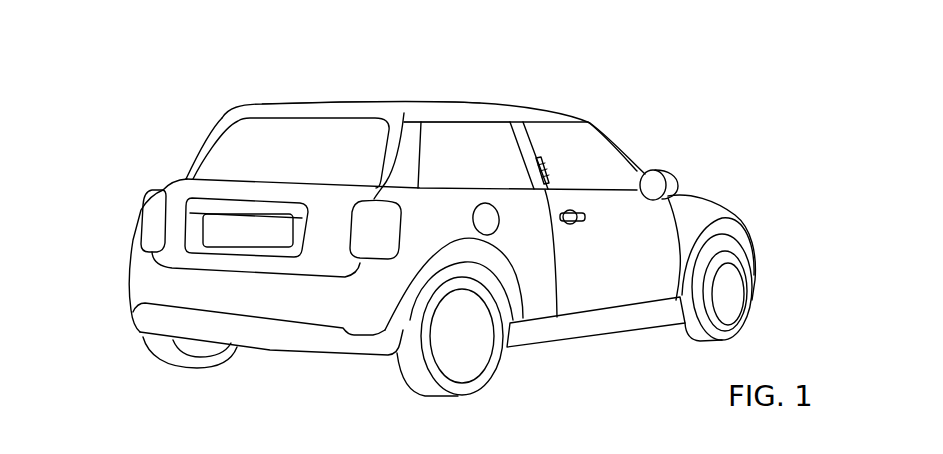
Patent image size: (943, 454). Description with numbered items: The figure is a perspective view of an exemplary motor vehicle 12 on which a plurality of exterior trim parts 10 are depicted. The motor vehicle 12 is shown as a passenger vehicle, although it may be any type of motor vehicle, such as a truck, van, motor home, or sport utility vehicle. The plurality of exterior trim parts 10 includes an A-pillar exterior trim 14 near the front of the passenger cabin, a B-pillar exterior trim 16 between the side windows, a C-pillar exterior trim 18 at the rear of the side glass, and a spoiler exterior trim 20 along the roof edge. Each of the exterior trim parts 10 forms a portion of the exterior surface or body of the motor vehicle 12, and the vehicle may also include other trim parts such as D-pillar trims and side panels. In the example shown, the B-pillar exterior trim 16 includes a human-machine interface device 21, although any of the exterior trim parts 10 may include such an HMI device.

The exterior trim parts 10 is at (618, 62).
The motor vehicle 12 is at (138, 272).
The A-pillar exterior trim 14 is at (638, 168).
The B-pillar exterior trim 16 is at (531, 143).
The C-pillar exterior trim 18 is at (409, 152).
The spoiler exterior trim 20 is at (296, 111).
The human-machine interface (HMI) device 21 is at (549, 179).